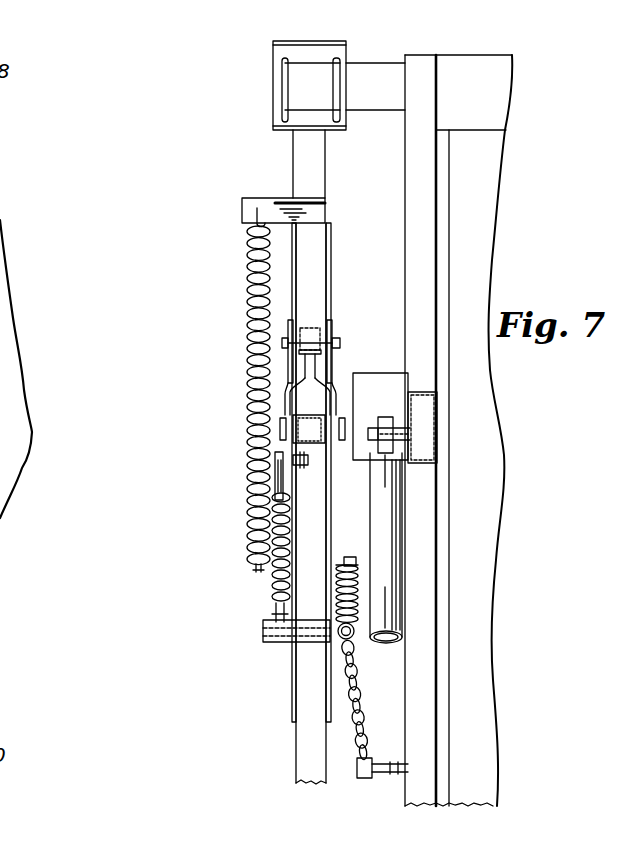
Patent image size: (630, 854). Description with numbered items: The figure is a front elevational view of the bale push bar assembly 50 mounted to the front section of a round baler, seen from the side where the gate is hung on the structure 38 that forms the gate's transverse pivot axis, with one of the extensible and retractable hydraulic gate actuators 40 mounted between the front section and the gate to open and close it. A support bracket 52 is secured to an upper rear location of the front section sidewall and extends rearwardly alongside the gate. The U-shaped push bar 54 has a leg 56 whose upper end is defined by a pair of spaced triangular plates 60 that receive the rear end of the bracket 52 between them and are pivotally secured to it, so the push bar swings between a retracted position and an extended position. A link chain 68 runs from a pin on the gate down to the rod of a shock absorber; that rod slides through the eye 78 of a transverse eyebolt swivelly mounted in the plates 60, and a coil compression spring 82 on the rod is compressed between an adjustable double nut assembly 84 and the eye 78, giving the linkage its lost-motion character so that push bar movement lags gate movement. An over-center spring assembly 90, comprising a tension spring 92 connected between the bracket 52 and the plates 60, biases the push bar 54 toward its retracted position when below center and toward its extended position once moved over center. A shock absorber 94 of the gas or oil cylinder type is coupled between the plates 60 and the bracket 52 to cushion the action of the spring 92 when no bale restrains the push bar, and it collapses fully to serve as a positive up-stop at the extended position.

The structure forming a transverse pivot axis 38 is at (373, 93).
The hydraulic gate actuator 40 is at (402, 513).
The bale push bar assembly 50 is at (245, 428).
The support bracket 52 is at (326, 250).
The U-shaped push bar 54 is at (292, 758).
The leg of the push bar 56 is at (328, 768).
The triangular plate 60 is at (326, 695).
The link chain 68 is at (372, 720).
The eye of the eyebolt 78 is at (356, 640).
The coil compression spring 82 is at (357, 597).
The adjustable double nut assembly 84 is at (353, 562).
The over-center spring assembly 90 is at (246, 266).
The tension spring 92 is at (247, 326).
The shock absorber 94 is at (313, 371).